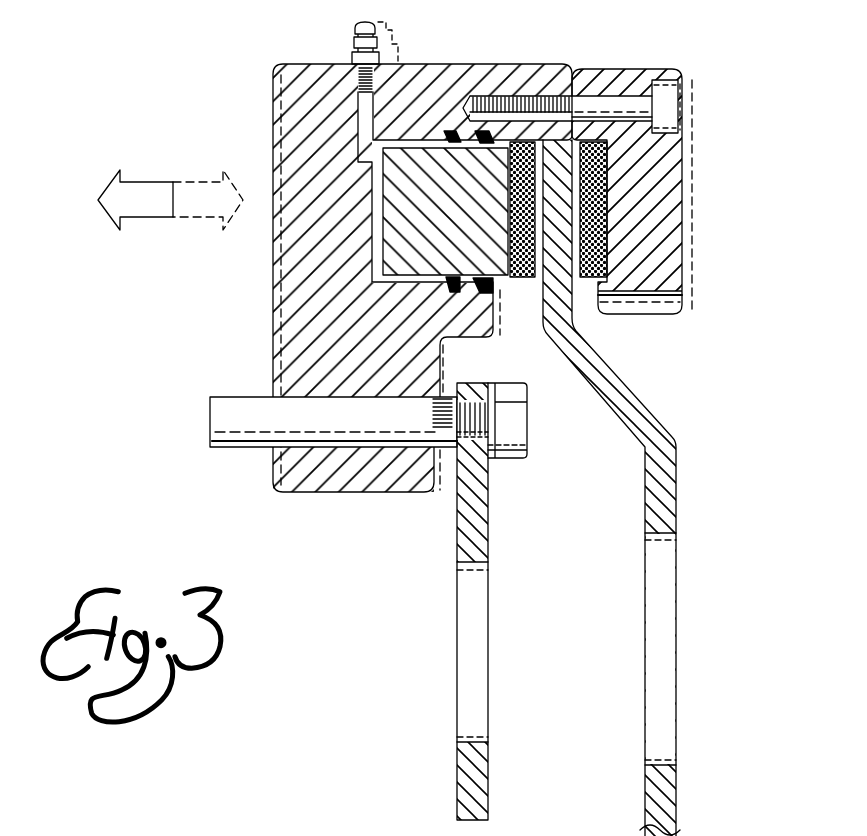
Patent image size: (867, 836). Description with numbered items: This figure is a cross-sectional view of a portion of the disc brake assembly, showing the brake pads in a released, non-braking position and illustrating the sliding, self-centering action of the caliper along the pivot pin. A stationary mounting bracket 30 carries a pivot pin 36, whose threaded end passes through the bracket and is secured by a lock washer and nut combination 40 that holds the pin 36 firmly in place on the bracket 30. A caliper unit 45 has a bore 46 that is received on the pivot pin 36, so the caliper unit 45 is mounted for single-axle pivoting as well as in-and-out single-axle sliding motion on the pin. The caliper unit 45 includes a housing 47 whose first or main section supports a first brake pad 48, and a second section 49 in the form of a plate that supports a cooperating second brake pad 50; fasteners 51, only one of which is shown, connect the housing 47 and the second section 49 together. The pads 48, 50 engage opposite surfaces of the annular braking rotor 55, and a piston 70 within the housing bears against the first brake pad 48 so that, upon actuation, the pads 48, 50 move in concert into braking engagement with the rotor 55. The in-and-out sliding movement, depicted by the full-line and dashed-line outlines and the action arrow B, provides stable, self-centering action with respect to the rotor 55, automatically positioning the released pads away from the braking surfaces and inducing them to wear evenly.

The stationary mounting bracket 30 is at (442, 598).
The pivot pin 36 is at (233, 448).
The lock washer and nut combination 40 is at (500, 460).
The caliper unit 45 is at (461, 276).
The bore 46 is at (335, 448).
The housing 47 is at (313, 313).
The first brake pad 48 is at (523, 150).
The second section 49 is at (667, 193).
The second brake pad 50 is at (593, 150).
The fasteners 51 is at (633, 103).
The annular braking rotor 55 is at (630, 412).
The piston 70 is at (427, 177).
The action arrow B is at (143, 218).